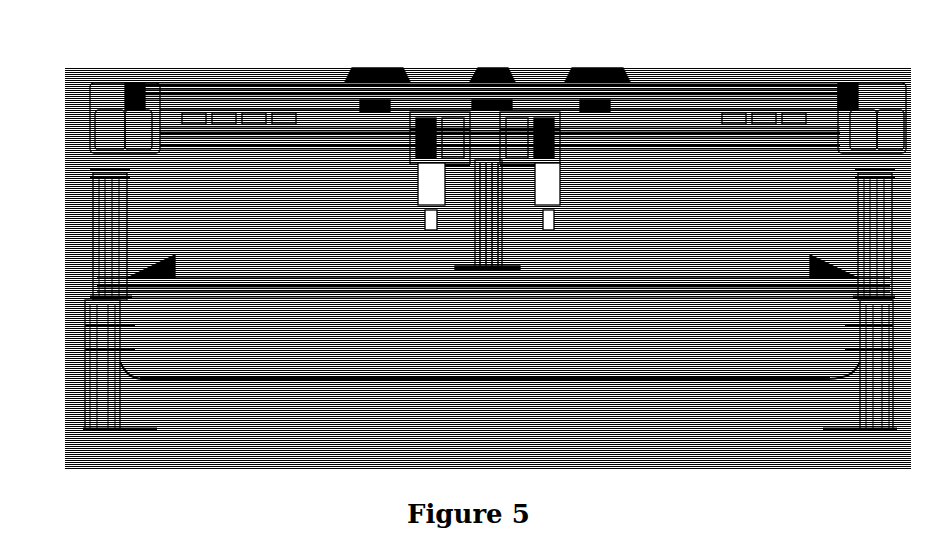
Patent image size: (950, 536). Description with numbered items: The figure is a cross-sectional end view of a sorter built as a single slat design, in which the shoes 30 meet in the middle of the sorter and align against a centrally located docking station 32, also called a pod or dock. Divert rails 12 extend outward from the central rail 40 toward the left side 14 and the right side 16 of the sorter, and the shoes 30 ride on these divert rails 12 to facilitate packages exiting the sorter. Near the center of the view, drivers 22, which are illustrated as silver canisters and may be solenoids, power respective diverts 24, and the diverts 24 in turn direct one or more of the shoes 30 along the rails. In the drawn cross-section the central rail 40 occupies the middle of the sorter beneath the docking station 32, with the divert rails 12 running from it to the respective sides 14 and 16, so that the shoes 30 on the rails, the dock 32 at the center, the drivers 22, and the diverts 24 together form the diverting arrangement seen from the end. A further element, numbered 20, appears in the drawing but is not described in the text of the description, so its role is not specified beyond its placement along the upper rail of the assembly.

The divert rails 12 is at (318, 120).
The left side 14 is at (102, 97).
The right side 16 is at (862, 90).
The top rail 20 is at (258, 88).
The drivers 22 is at (430, 193).
The diverts 24 is at (448, 128).
The shoes 30 is at (365, 75).
The docking station 32 is at (492, 76).
The central rail 40 is at (490, 157).